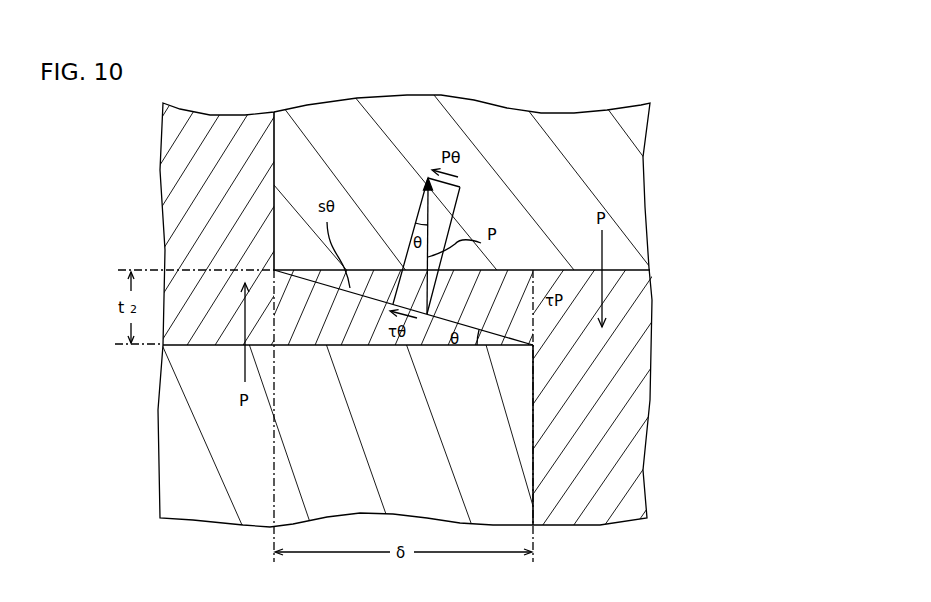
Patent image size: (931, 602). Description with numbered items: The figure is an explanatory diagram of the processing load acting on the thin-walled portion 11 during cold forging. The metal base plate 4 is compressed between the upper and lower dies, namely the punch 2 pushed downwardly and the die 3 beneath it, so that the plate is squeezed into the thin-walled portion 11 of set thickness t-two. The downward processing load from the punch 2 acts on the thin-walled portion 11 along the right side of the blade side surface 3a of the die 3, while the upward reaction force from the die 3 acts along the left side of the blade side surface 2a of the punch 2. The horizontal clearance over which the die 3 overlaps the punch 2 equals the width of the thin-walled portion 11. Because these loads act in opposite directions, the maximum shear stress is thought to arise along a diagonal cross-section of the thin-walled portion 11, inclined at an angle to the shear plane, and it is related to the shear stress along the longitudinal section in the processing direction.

The punch 2 is at (362, 133).
The blade side surface 2a is at (272, 154).
The die 3 is at (190, 434).
The blade side surface 3a is at (537, 473).
The metal base plate 4 is at (190, 167).
The thin-walled portion 11 is at (490, 294).